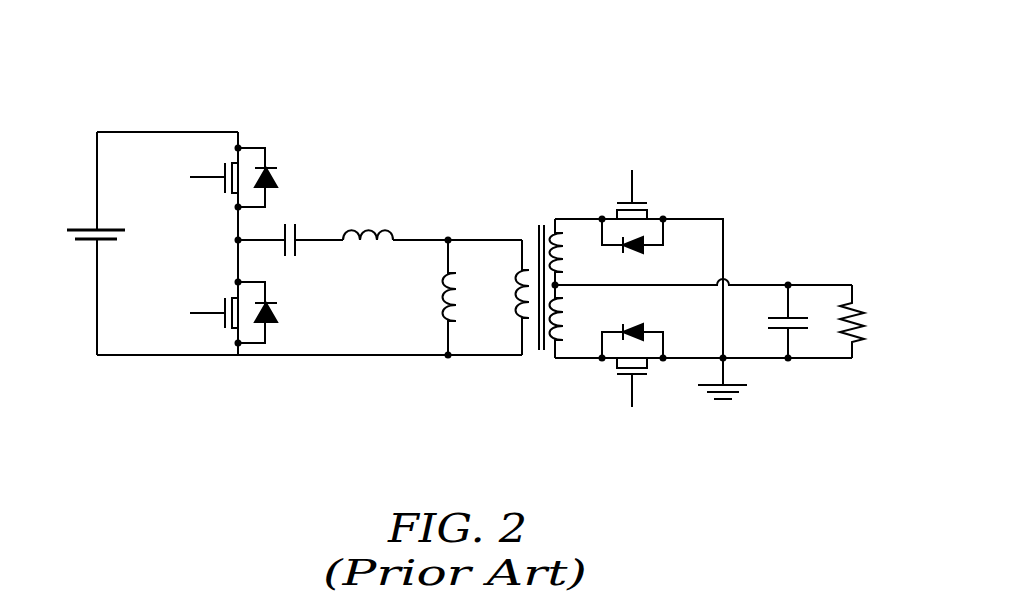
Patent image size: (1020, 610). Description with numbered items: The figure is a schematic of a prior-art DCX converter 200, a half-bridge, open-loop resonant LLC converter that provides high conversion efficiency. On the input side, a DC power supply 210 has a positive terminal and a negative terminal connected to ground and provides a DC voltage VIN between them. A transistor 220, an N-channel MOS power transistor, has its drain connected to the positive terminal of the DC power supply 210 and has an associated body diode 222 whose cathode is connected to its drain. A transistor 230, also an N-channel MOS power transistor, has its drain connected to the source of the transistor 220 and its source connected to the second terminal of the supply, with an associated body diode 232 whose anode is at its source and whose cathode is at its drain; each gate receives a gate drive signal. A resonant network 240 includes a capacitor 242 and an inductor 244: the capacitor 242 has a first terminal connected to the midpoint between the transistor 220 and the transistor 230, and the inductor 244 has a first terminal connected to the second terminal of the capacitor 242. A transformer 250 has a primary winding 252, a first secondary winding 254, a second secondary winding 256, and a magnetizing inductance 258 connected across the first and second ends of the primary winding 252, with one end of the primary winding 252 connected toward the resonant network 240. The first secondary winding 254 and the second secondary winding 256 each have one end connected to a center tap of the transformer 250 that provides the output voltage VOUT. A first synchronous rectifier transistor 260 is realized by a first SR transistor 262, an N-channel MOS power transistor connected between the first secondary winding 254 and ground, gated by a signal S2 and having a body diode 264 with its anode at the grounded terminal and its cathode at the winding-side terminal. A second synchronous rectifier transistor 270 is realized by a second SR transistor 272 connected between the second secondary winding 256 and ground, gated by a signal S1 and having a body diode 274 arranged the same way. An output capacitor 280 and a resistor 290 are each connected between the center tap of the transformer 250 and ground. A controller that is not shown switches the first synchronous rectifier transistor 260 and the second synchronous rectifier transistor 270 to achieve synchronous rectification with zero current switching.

The DCX converter 200 is at (133, 43).
The DC power supply 210 is at (80, 228).
The transistor 220 is at (233, 193).
The body diode 222 is at (273, 172).
The transistor 230 is at (233, 300).
The body diode 232 is at (273, 315).
The resonant network 240 is at (372, 162).
The capacitor 242 is at (297, 228).
The inductor 244 is at (373, 230).
The transformer 250 is at (540, 222).
The primary winding 252 is at (515, 300).
The first secondary winding 254 is at (565, 253).
The second secondary winding 256 is at (568, 318).
The magnetizing inductance 258 is at (440, 297).
The first synchronous rectifier transistor 260 is at (680, 195).
The first SR transistor 262 is at (620, 202).
The body diode 264 is at (643, 252).
The second synchronous rectifier transistor 270 is at (655, 398).
The second SR transistor 272 is at (623, 382).
The body diode 274 is at (640, 323).
The output capacitor 280 is at (781, 316).
The resistor 290 is at (868, 322).